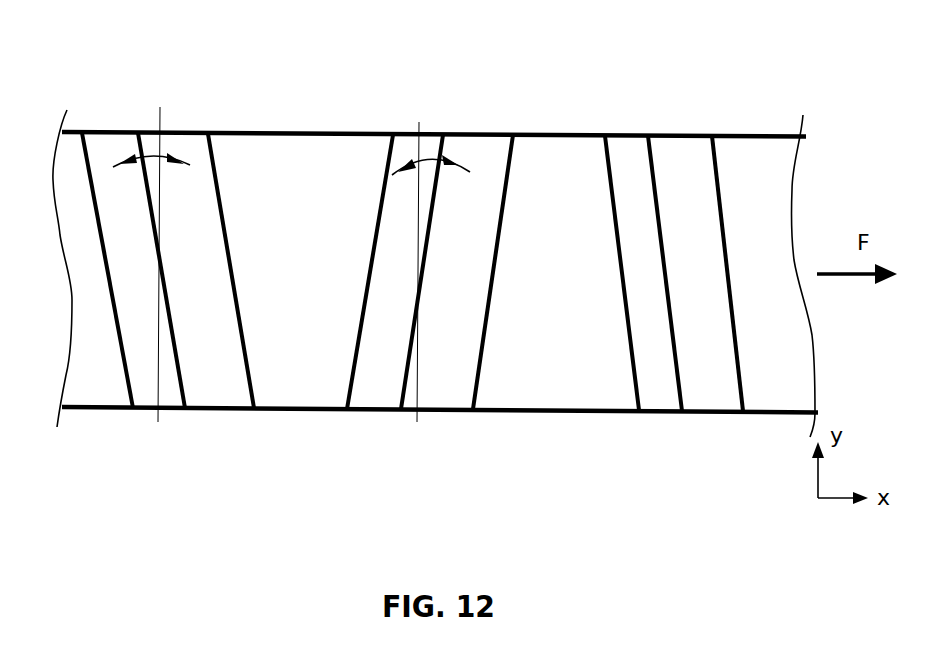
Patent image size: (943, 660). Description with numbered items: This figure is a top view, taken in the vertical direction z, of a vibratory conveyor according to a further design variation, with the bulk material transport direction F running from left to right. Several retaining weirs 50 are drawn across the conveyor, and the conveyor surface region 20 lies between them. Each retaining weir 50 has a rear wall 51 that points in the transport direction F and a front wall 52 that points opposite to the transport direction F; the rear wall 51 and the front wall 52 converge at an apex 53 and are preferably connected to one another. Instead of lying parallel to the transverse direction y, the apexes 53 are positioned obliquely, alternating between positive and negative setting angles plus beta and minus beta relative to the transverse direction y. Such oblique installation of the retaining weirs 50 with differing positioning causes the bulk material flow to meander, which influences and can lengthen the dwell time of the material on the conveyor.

The belt body 20 is at (547, 182).
The retaining weir 50 is at (395, 238).
The rear wall 51 is at (212, 375).
The front wall 52 is at (142, 363).
The apex 53 is at (190, 407).